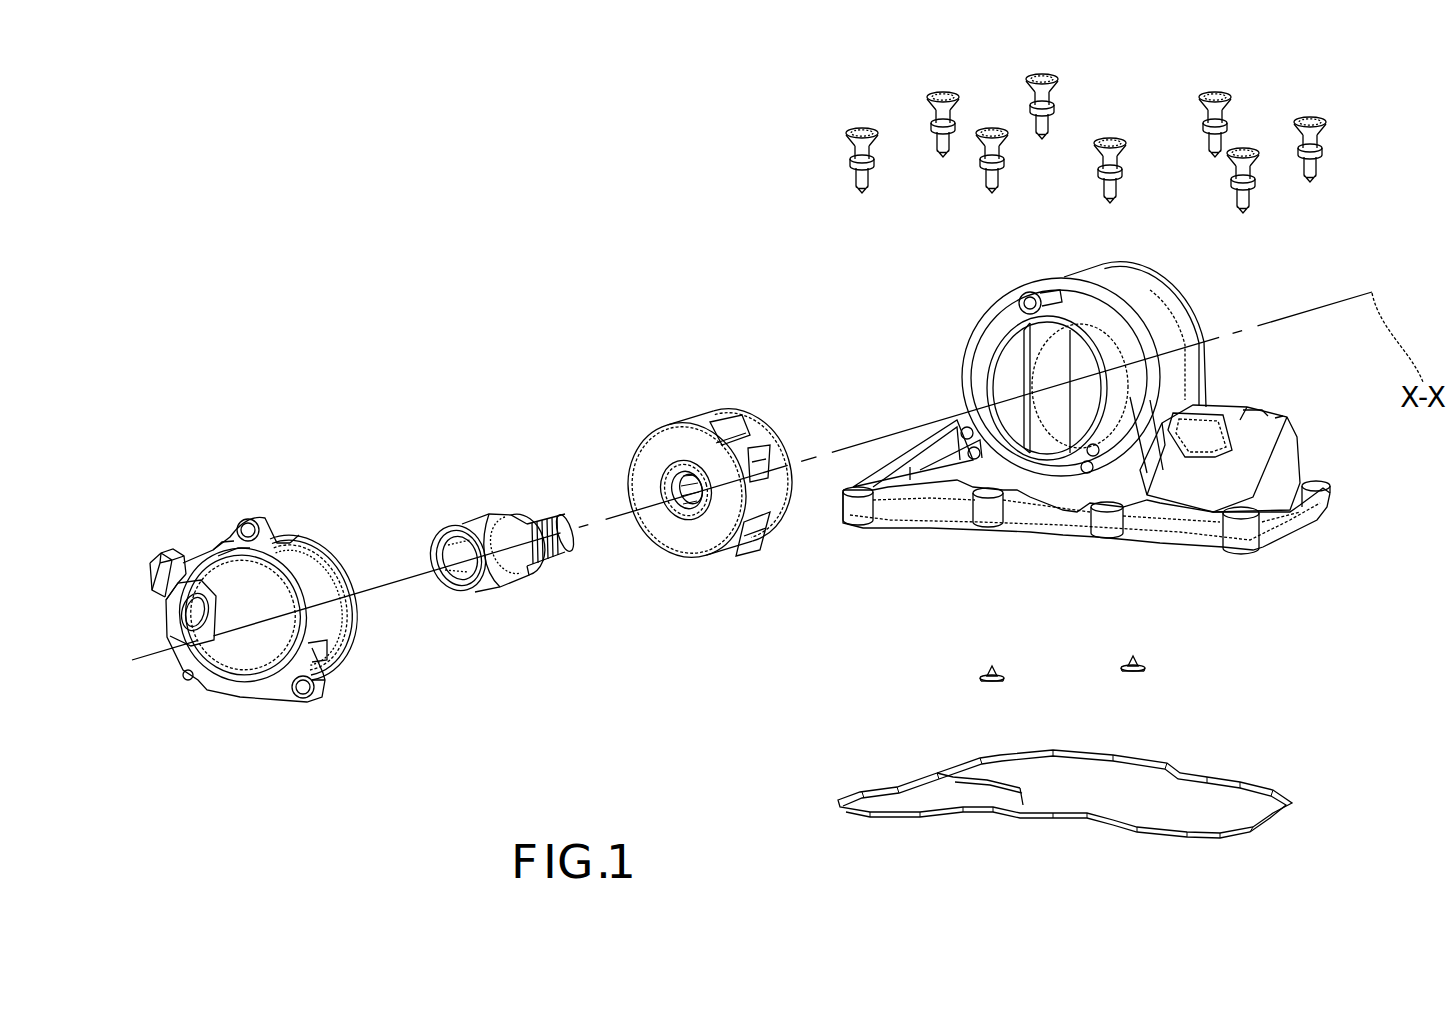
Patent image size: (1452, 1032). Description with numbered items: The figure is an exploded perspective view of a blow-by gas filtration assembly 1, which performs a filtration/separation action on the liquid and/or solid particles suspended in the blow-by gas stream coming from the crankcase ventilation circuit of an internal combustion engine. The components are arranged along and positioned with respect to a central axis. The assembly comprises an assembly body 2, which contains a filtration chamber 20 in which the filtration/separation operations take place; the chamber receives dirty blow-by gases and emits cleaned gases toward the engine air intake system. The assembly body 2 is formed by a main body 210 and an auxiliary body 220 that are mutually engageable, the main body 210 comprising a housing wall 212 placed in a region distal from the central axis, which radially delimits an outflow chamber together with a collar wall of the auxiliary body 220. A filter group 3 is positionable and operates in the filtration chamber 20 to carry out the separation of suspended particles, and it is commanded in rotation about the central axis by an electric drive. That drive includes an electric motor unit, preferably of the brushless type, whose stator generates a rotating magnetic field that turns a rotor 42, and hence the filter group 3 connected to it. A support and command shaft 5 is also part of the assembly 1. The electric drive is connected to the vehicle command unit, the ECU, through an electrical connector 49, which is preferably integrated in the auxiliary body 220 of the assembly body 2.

The blow-by gas filtration assembly 1 is at (433, 144).
The assembly body 2 is at (1240, 308).
The filter group 3 is at (702, 401).
The support and command shaft 5 is at (482, 500).
The filtration chamber 20 is at (201, 516).
The rotor 42 is at (498, 582).
The electrical connector 49 is at (152, 558).
The main body 210 is at (1225, 577).
The housing wall 212 is at (1002, 382).
The auxiliary body 220 is at (1042, 356).